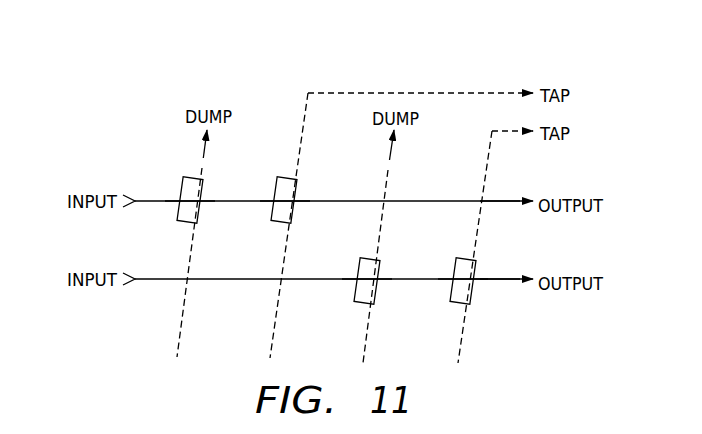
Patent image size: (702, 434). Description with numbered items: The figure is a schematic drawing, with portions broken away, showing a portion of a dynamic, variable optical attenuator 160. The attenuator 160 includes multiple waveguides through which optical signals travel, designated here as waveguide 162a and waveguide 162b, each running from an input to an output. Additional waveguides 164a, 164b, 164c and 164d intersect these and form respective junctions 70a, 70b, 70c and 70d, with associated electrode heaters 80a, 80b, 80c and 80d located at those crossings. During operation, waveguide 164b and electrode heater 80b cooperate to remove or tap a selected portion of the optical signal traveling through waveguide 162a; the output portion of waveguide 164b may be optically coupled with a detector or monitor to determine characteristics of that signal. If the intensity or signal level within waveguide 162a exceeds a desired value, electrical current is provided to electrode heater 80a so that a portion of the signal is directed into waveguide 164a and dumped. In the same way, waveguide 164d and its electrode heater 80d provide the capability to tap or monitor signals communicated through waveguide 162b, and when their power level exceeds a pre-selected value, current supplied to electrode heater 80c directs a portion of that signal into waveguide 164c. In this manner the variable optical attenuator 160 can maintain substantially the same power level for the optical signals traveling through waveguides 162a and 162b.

The dynamic variable optical attenuator 160 is at (163, 65).
The electrode heater 80a is at (185, 182).
The electrode heater 80b is at (287, 178).
The electrode heater 80c is at (360, 262).
The electrode heater 80d is at (455, 262).
The junction 70a is at (199, 203).
The junction 70b is at (292, 203).
The junction 70c is at (376, 285).
The junction 70d is at (471, 285).
The waveguide 162a is at (503, 201).
The waveguide 162b is at (520, 260).
The waveguide 164a is at (180, 333).
The waveguide 164b is at (272, 333).
The waveguide 164c is at (368, 340).
The waveguide 164d is at (463, 340).